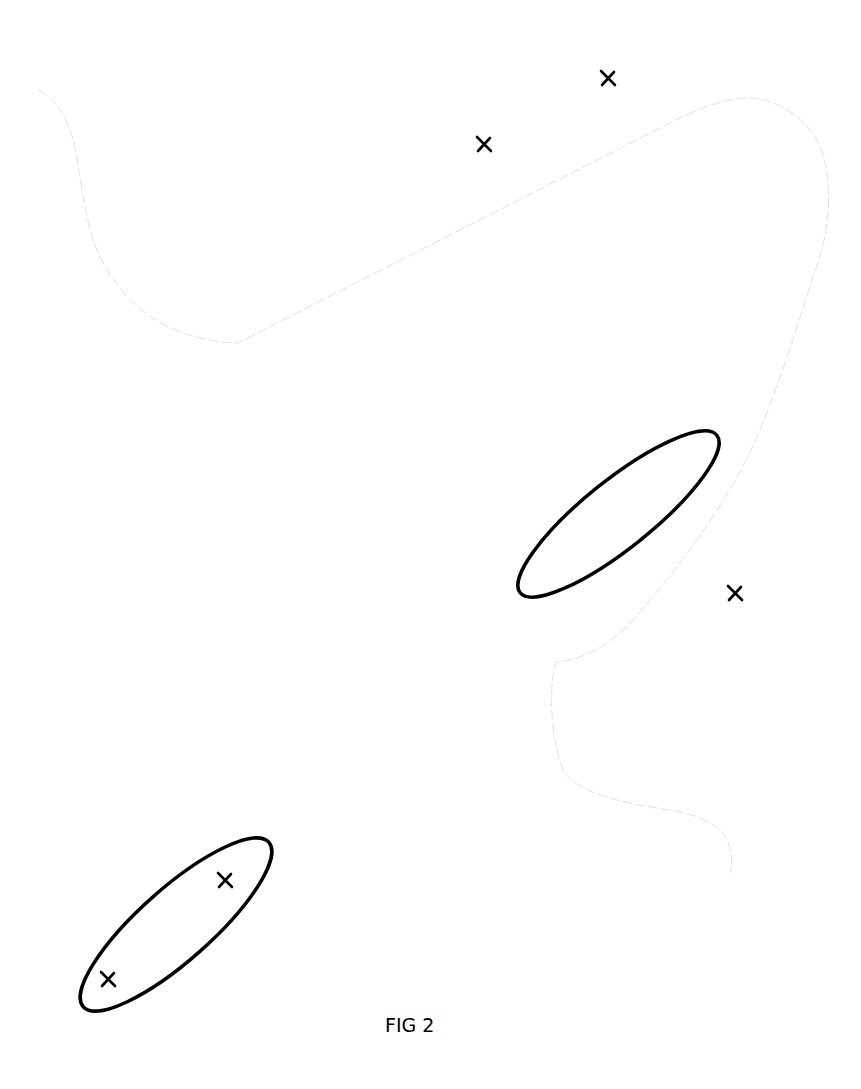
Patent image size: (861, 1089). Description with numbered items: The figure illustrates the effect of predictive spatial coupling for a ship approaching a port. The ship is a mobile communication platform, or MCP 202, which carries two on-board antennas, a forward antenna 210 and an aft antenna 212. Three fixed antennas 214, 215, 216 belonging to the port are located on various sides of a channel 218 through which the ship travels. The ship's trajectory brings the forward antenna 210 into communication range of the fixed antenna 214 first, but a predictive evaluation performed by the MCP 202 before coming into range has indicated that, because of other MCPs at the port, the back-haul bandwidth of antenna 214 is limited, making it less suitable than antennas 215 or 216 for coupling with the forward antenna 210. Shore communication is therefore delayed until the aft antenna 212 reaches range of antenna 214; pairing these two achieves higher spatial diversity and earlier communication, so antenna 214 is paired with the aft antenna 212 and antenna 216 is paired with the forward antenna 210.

The MCP 202 is at (240, 923).
The forward antenna 210 is at (98, 977).
The aft antenna 212 is at (210, 873).
The fixed antenna 214 is at (748, 583).
The fixed antenna 215 is at (622, 68).
The fixed antenna 216 is at (500, 135).
The channel 218 is at (583, 314).